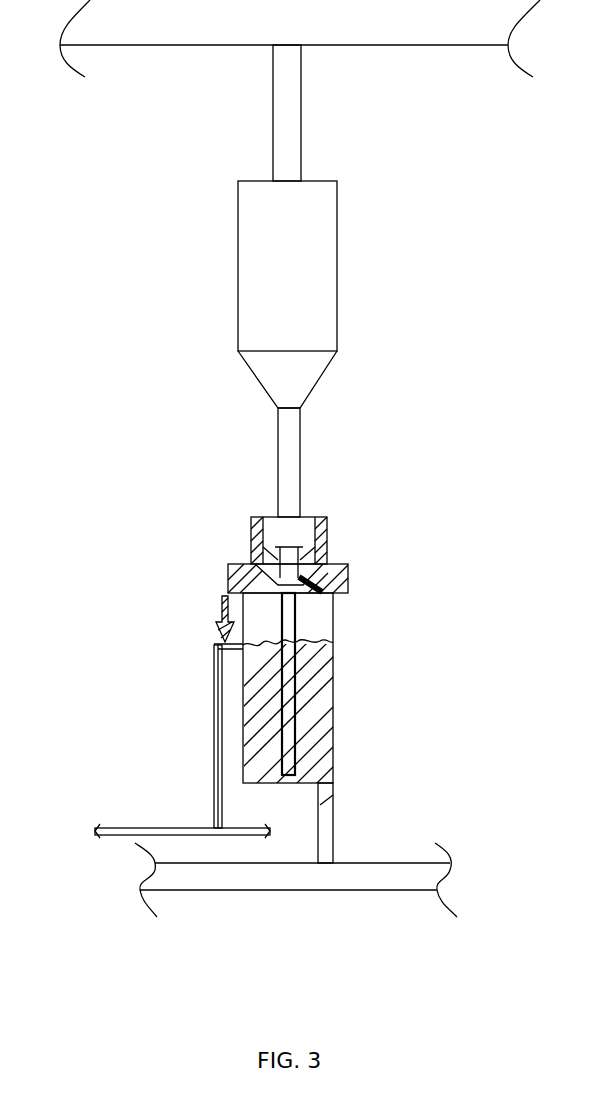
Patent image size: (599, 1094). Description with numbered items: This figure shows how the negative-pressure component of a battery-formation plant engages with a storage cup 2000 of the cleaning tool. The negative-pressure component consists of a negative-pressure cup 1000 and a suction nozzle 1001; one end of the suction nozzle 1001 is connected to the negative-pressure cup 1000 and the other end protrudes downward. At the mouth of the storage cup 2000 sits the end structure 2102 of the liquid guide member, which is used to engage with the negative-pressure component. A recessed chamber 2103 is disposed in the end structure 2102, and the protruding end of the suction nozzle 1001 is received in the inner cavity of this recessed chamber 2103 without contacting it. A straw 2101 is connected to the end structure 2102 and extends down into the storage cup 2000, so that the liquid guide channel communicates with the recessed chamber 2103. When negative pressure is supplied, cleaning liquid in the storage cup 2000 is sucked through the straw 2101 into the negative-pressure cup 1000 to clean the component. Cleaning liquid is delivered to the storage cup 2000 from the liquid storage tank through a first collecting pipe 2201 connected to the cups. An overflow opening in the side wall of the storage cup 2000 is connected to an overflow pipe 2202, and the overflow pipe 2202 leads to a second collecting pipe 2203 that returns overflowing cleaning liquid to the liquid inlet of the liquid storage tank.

The negative-pressure cup 1000 is at (255, 258).
The suction nozzle 1001 is at (252, 532).
The end structure 2102 is at (230, 575).
The recessed chamber 2103 is at (322, 590).
The straw 2101 is at (297, 608).
The storage cup 2000 is at (333, 720).
The overflow pipe 2202 is at (213, 695).
The second collecting pipe 2203 is at (165, 830).
The first collecting pipe 2201 is at (257, 886).